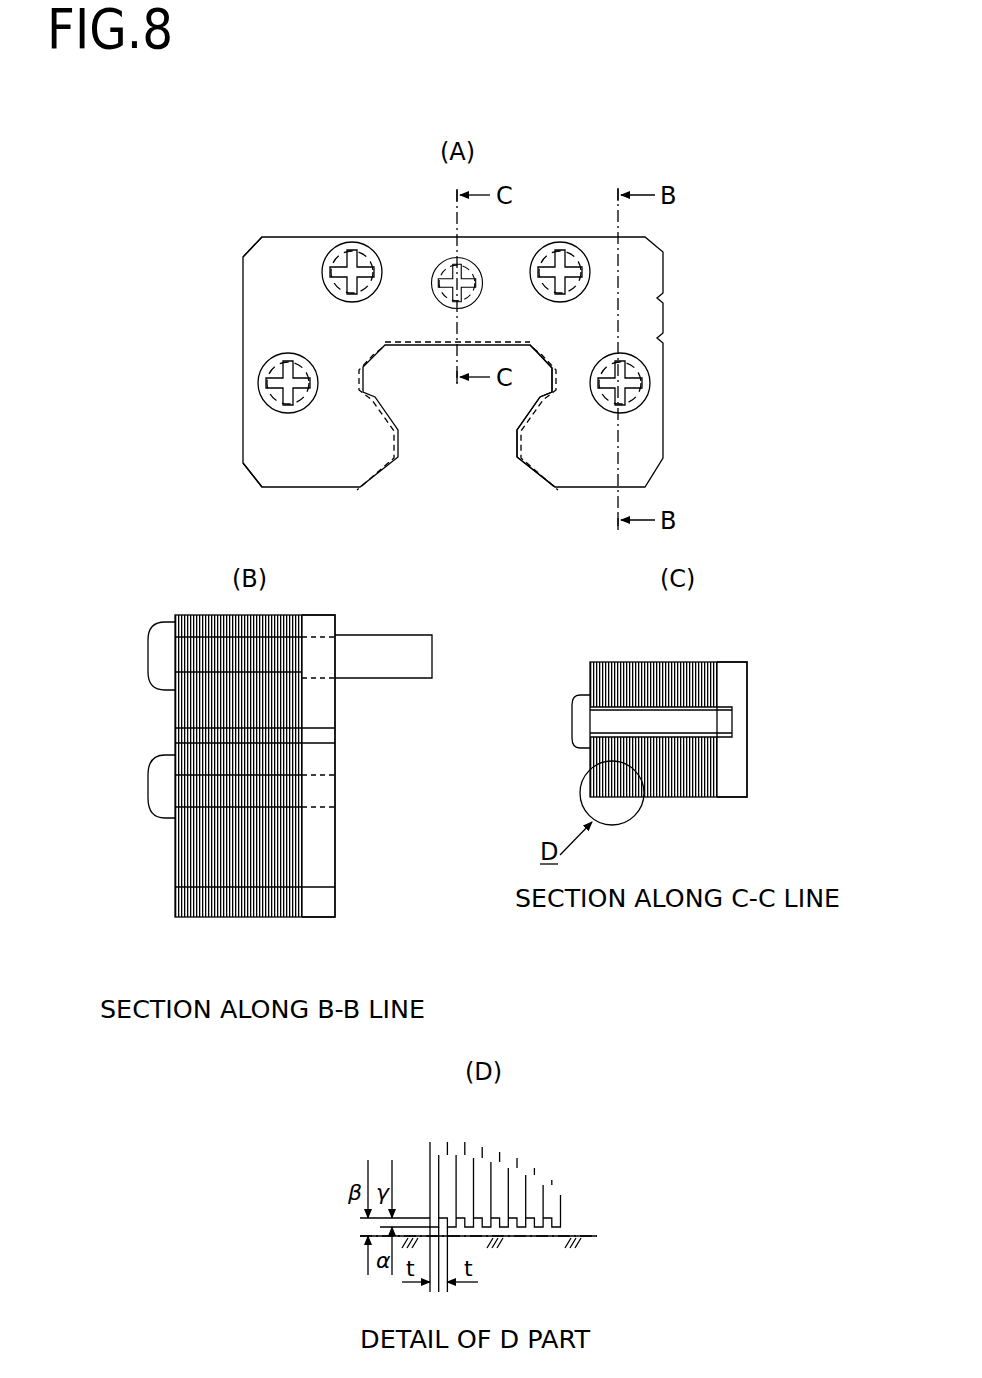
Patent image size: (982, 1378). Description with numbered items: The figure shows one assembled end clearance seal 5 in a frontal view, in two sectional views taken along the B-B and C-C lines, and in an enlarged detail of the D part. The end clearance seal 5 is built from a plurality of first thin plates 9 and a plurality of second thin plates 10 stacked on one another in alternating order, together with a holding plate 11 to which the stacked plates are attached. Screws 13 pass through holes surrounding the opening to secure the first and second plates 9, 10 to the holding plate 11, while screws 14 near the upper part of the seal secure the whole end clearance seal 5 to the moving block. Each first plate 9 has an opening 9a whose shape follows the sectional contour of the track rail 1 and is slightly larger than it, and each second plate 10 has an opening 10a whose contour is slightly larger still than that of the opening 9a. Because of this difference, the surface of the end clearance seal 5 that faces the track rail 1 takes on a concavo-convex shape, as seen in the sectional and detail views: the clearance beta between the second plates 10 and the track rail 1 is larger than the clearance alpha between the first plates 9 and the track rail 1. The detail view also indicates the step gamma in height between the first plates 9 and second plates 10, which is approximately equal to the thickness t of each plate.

The track rail 1 is at (587, 1245).
The end clearance seal 5 is at (372, 258).
The first thin plate 9 is at (287, 262).
The second thin plate 10 is at (440, 1140).
The opening of first plate 9a is at (517, 437).
The opening of second plate 10a is at (527, 413).
The holding plate 11 is at (318, 880).
The screw 13 is at (302, 400).
The screw 14 is at (568, 258).